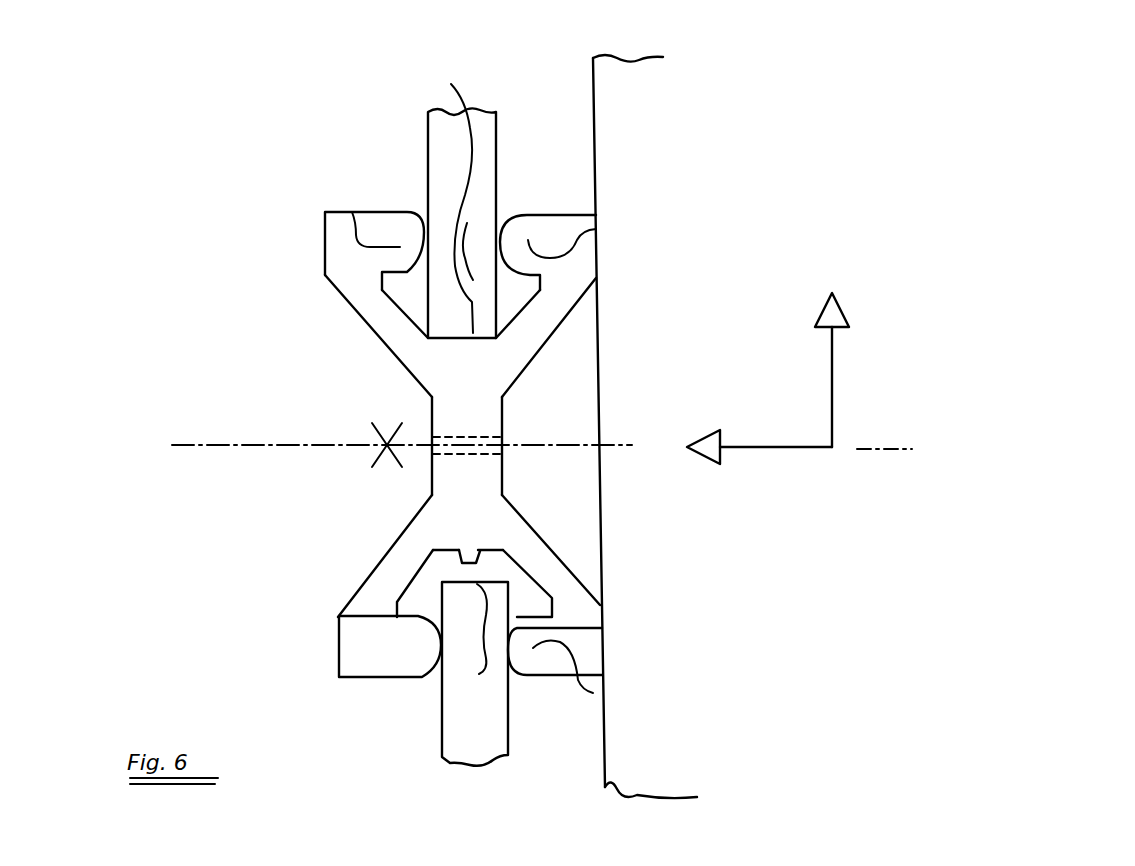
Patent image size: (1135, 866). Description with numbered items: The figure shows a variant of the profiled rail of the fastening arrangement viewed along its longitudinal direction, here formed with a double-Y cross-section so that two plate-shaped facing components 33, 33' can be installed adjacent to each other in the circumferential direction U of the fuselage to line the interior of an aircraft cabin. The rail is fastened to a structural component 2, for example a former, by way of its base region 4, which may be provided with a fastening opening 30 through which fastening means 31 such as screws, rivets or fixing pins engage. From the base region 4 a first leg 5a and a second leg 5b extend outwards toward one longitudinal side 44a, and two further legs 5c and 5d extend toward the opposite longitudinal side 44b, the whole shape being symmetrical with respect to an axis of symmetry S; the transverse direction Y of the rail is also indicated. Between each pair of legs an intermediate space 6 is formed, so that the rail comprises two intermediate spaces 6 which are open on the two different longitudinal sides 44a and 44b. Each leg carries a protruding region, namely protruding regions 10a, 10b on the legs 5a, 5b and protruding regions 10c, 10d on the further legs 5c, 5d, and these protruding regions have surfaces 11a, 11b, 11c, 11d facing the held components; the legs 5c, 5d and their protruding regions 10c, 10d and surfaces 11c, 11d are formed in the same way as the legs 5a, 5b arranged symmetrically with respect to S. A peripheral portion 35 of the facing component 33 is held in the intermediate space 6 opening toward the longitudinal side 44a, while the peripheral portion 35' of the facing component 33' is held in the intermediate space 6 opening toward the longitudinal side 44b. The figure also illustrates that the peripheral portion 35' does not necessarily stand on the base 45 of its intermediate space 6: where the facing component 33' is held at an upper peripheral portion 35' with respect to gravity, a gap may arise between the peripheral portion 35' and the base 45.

The structural component 2 is at (620, 126).
The base region 4 is at (450, 474).
The first leg 5a is at (393, 331).
The second leg 5b is at (540, 328).
The further leg 5c is at (393, 573).
The further leg 5d is at (542, 568).
The intermediate space 6 is at (513, 292).
The protruding region 10a is at (352, 212).
The protruding region 10b is at (596, 229).
The protruding region 10c is at (418, 653).
The protruding region 10d is at (603, 700).
The surface 11a is at (436, 227).
The surface 11b is at (490, 226).
The surface 11c is at (448, 625).
The surface 11d is at (507, 666).
The fastening opening 30 is at (490, 437).
The fastening means 31 is at (423, 443).
The plate-shaped facing component 33 is at (419, 200).
The plate-shaped facing component 33' is at (506, 705).
The peripheral portion 35 is at (445, 197).
The peripheral portion 35' is at (574, 629).
The longitudinal side 44a is at (553, 192).
The longitudinal side 44b is at (560, 706).
The base 45 is at (393, 348).
The axis of symmetry S is at (192, 445).
The circumferential direction U is at (833, 373).
The transverse direction Y is at (762, 448).